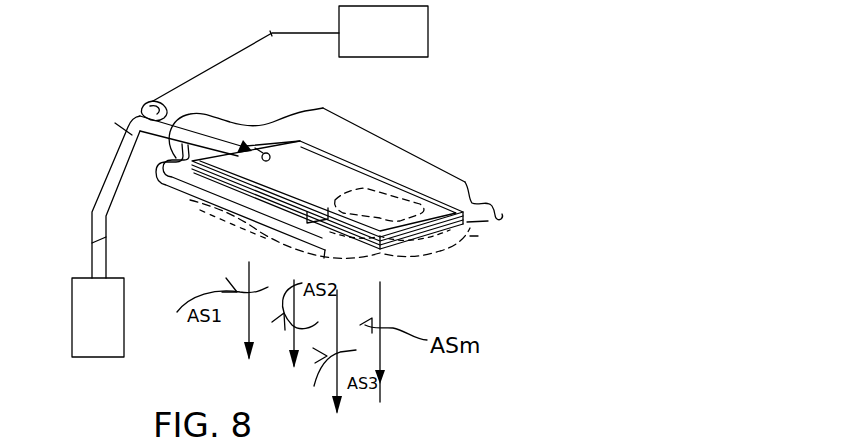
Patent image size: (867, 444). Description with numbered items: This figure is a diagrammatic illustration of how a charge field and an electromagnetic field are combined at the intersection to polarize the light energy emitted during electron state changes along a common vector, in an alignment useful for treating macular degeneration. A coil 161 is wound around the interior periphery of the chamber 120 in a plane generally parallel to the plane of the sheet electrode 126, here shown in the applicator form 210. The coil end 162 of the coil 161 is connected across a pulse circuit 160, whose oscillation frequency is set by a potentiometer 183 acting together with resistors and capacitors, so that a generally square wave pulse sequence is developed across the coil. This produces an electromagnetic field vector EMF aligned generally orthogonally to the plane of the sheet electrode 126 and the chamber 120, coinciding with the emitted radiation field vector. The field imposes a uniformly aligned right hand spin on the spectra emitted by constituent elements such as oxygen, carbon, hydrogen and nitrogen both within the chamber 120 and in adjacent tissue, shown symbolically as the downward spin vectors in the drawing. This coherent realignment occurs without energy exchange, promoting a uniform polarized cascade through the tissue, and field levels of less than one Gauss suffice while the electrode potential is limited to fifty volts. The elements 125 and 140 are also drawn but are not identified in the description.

The chamber 120 is at (455, 190).
The supply line 125 is at (204, 67).
The sheet electrode 126 is at (322, 157).
The controller 140 is at (394, 42).
The pulse circuit 160 is at (88, 349).
The coil 161 is at (440, 230).
The coil end 162 is at (106, 214).
The potentiometer 183 is at (106, 238).
The applicator form 210 is at (412, 166).